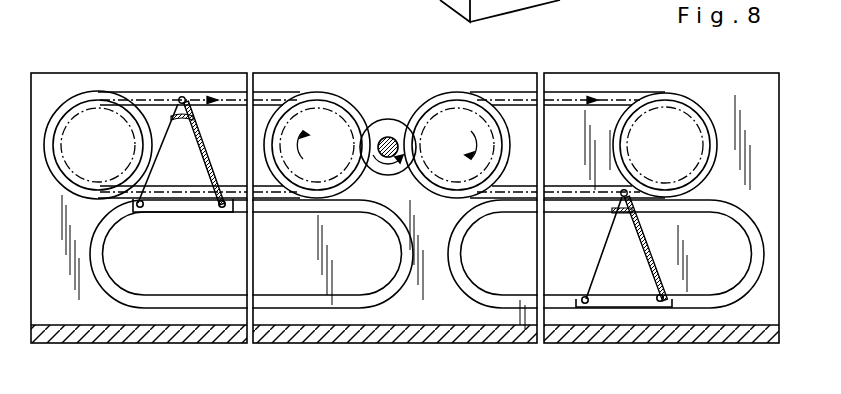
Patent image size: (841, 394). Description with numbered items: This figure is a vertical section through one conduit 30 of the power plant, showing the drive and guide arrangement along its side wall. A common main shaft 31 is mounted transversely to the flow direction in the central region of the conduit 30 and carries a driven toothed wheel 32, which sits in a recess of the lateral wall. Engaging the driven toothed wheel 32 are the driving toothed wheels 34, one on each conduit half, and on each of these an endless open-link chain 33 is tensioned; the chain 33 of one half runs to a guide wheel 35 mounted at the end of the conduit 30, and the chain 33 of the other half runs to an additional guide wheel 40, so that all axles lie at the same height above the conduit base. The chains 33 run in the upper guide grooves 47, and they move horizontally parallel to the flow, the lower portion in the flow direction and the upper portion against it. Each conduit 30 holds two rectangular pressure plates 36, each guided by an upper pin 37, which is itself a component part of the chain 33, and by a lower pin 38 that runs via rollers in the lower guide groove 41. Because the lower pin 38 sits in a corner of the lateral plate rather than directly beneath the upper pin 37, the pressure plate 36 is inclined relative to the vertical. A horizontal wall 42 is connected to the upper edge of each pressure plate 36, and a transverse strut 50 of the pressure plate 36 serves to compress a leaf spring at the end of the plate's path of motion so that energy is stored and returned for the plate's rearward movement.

The conduit 30 is at (420, 300).
The main shaft 31 is at (392, 138).
The driven toothed wheel 32 is at (384, 122).
The endless open-link chain 33 is at (262, 100).
The driving toothed wheel 34 is at (335, 95).
The guide wheel 35 is at (99, 92).
The pressure plate 36 is at (210, 146).
The upper pin 37 is at (184, 95).
The lower pin 38 is at (221, 212).
The guide wheel 40 is at (713, 140).
The guide groove 41 is at (164, 302).
The horizontal wall 42 is at (179, 120).
The upper guide groove 47 is at (151, 95).
The transverse strut 50 is at (584, 304).